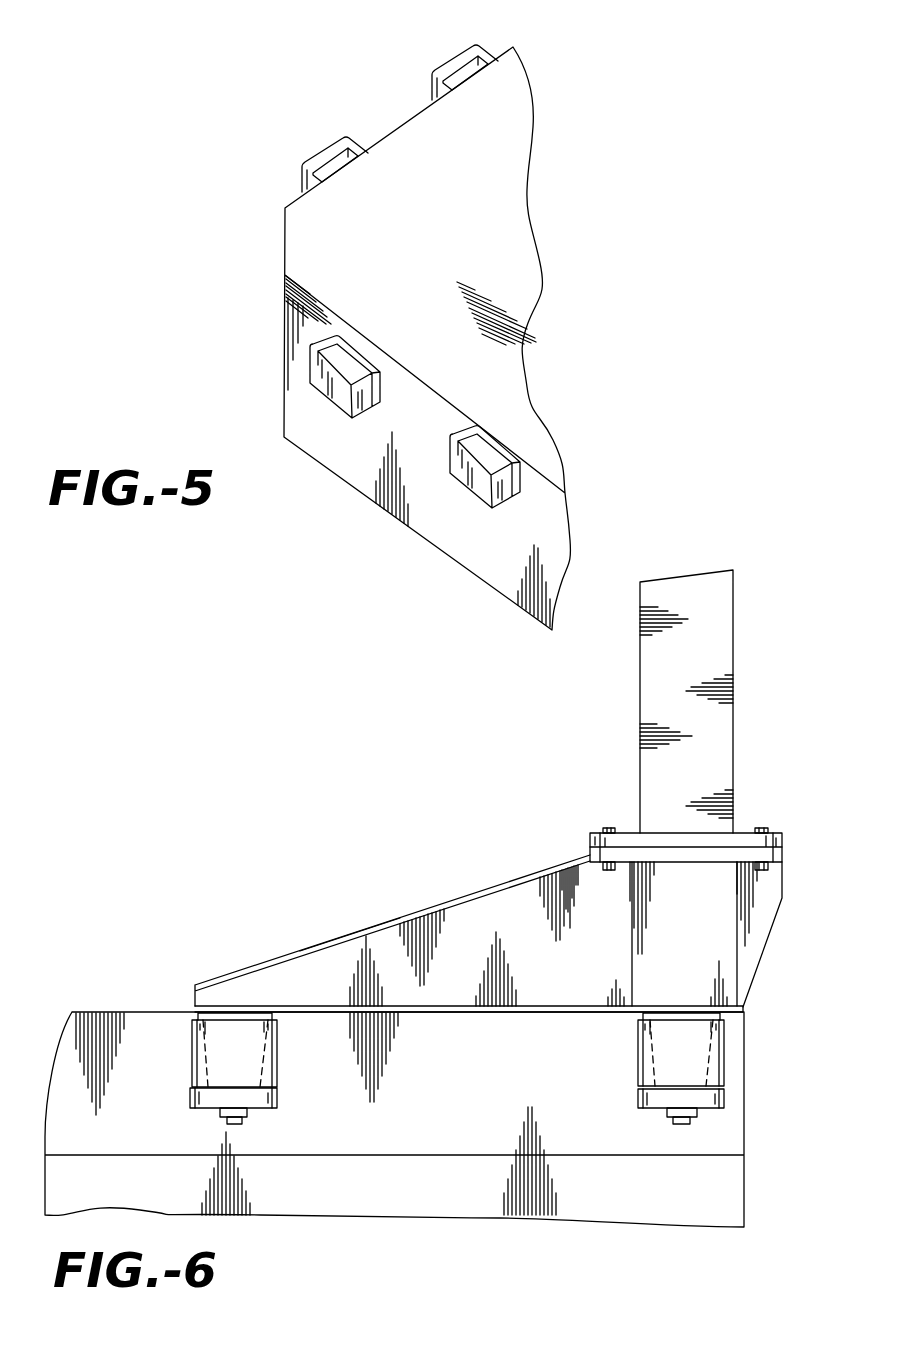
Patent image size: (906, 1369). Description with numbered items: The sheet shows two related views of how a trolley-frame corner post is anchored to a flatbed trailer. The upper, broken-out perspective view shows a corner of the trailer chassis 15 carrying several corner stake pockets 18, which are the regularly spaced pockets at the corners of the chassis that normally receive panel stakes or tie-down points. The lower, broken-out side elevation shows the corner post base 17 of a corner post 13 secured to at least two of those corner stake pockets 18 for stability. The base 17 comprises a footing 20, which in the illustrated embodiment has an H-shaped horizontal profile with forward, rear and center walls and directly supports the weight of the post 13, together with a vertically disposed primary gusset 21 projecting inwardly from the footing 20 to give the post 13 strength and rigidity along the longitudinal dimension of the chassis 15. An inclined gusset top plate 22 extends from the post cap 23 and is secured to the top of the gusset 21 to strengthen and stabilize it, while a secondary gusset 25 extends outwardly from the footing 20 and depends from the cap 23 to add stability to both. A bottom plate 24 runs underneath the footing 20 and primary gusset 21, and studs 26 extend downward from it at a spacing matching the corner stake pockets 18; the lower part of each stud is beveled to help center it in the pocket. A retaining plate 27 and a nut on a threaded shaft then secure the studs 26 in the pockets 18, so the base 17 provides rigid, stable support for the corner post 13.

In FIG. 6, the corner post 13 is at (713, 648).
In FIG. 5, the flatbed trailer chassis 15 is at (285, 262).
In FIG. 6, the flatbed trailer chassis 15 is at (700, 1137).
In FIG. 6, the corner post base 17 is at (513, 960).
In FIG. 5, the corner stake pocket 18 is at (320, 153).
In FIG. 6, the corner stake pocket 18 is at (193, 1054).
In FIG. 6, the footing 20 is at (706, 931).
In FIG. 6, the primary gusset 21 is at (515, 900).
In FIG. 6, the inclined gusset top plate 22 is at (435, 907).
In FIG. 6, the post cap 23 is at (785, 856).
In FIG. 6, the bottom plate 24 is at (463, 1013).
In FIG. 6, the secondary gusset 25 is at (784, 880).
In FIG. 6, the stud 26 is at (277, 1057).
In FIG. 6, the retaining plate 27 is at (278, 1098).